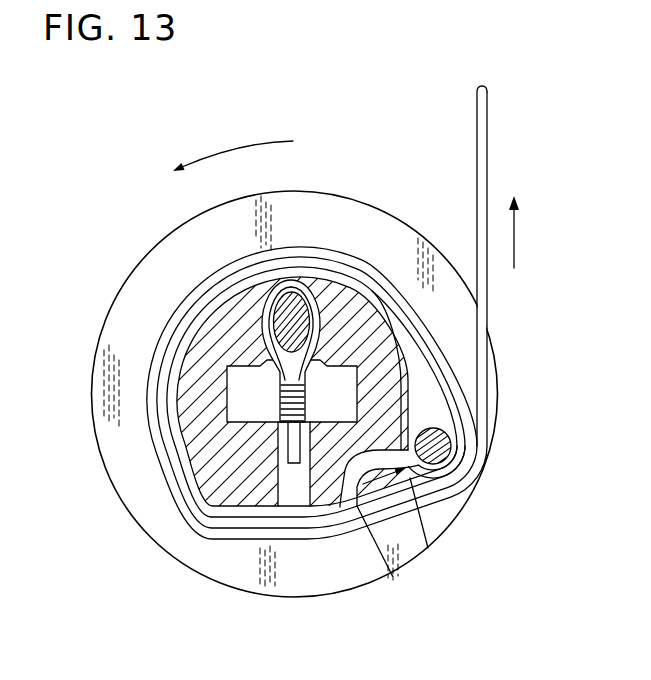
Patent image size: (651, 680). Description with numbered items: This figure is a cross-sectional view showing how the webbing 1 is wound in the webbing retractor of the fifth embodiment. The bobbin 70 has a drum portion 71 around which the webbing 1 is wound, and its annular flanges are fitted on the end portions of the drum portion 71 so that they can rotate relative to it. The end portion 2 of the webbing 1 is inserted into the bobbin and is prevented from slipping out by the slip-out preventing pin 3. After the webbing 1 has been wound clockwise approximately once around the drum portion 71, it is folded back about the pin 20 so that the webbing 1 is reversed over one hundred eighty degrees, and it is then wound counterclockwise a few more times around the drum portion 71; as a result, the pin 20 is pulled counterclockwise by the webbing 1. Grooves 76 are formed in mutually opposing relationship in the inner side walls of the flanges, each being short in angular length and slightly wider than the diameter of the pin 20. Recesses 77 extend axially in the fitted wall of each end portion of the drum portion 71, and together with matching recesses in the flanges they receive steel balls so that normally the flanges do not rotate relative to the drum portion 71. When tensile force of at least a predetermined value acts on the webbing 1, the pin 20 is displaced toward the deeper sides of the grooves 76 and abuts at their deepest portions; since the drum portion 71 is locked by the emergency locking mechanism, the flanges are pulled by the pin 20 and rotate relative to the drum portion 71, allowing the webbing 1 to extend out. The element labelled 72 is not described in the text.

The webbing 1 is at (496, 150).
The end portion of the webbing 2 is at (310, 283).
The slip-out preventing pin 3 is at (262, 305).
The pin 20 is at (452, 447).
The bobbin 70 is at (132, 259).
The drum portion 71 is at (200, 372).
The spiral band 72 is at (303, 504).
The grooves 76 is at (452, 524).
The recesses 77 is at (413, 537).